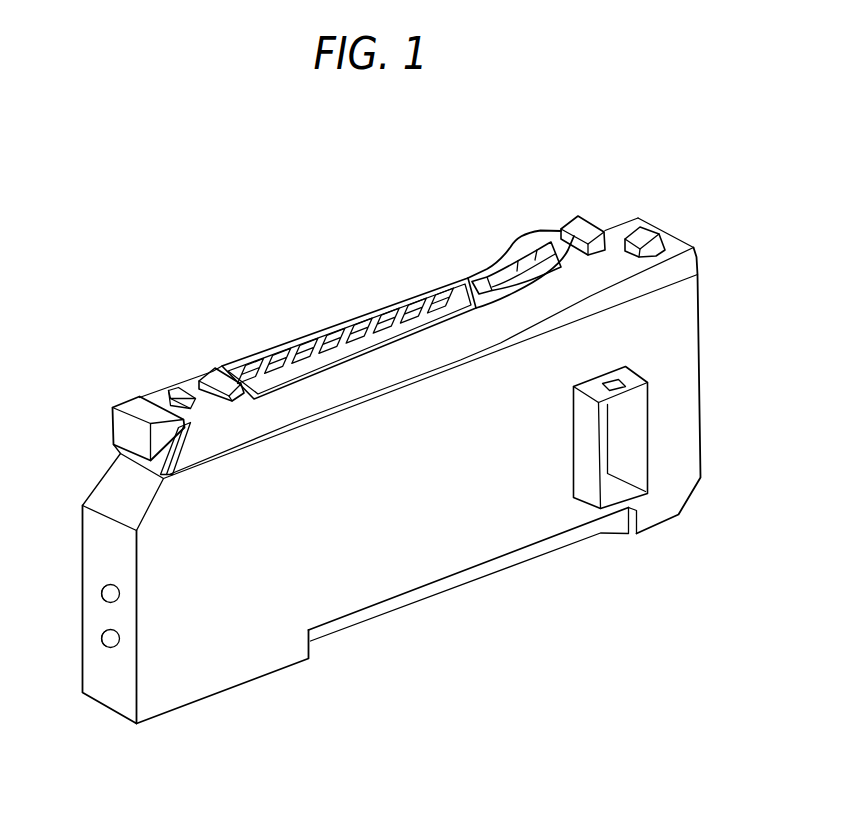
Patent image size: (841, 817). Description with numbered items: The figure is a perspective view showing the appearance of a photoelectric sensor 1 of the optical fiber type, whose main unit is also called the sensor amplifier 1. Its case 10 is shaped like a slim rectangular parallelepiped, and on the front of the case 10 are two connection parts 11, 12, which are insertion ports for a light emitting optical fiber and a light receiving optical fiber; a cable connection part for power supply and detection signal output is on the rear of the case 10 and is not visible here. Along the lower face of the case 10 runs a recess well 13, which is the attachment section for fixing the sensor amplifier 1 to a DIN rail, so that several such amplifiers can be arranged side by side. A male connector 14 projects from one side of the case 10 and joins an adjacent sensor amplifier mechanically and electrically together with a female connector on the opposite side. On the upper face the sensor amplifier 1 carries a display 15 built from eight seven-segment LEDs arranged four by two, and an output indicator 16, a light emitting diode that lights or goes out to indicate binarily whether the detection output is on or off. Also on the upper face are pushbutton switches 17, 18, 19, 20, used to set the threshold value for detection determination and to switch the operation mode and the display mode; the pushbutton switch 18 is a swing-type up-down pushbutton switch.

The photoelectric sensor 1 is at (328, 230).
The case 10 is at (680, 318).
The connection part 11 is at (92, 582).
The connection part 12 is at (92, 624).
The recess well 13 is at (412, 584).
The male connector 14 is at (580, 488).
The display 15 is at (326, 320).
The output indicator 16 is at (162, 374).
The pushbutton switch 17 is at (196, 362).
The pushbutton switch 18 is at (512, 270).
The pushbutton switch 19 is at (572, 216).
The pushbutton switch 20 is at (642, 222).